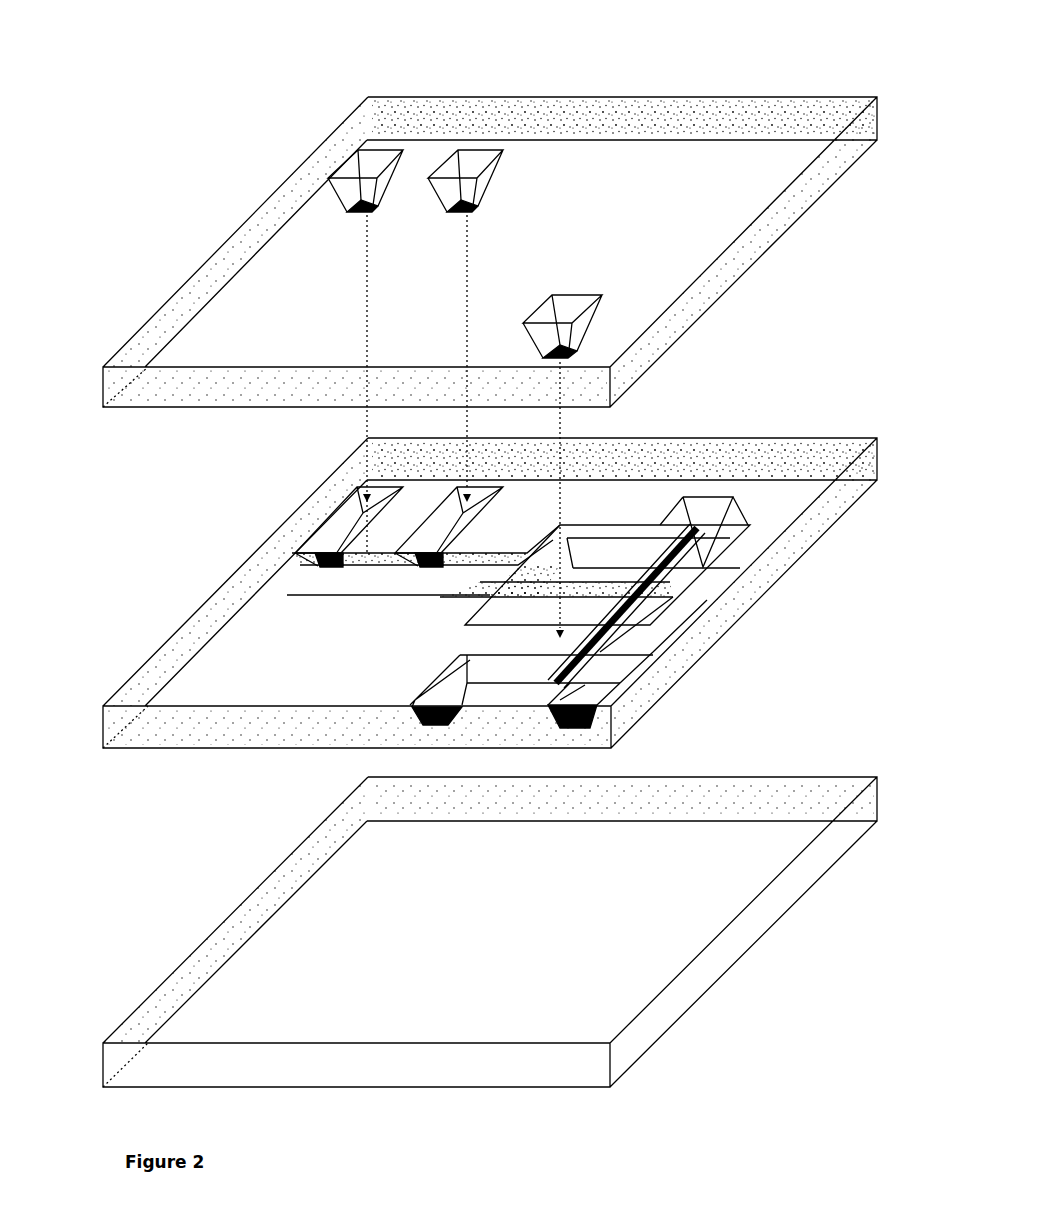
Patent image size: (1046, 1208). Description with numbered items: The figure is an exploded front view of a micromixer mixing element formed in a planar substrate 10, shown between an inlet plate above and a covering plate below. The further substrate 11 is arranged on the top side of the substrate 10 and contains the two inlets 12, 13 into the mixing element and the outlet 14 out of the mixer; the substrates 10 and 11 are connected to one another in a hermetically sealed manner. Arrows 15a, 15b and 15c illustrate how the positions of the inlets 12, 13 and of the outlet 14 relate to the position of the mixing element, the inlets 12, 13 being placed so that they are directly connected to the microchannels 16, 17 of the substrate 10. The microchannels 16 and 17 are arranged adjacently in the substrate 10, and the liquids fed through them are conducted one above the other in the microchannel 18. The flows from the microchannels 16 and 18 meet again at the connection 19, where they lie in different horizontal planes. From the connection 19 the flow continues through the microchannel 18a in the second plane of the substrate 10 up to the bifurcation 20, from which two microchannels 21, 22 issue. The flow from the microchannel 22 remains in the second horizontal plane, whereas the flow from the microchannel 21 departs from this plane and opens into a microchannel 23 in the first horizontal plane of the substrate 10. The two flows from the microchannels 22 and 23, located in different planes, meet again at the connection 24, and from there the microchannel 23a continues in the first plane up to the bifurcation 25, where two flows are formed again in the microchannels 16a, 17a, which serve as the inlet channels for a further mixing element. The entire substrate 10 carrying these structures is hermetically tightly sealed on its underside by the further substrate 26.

The planar substrate 10 is at (844, 500).
The further substrate 11 is at (745, 268).
The inlet 12 is at (350, 142).
The inlet 13 is at (467, 160).
The outlet 14 is at (572, 310).
The arrow 15a is at (367, 293).
The arrow 15b is at (468, 267).
The arrow 15c is at (557, 417).
The microchannel 16 is at (443, 518).
The microchannel 16a is at (630, 692).
The microchannel 17 is at (343, 522).
The microchannel 17a is at (440, 700).
The microchannel 18 is at (330, 577).
The microchannel 18a is at (410, 595).
The connection 19 is at (450, 580).
The bifurcation 20 is at (567, 538).
The microchannel 21 is at (718, 545).
The microchannel 22 is at (660, 603).
The microchannel 23 is at (680, 568).
The microchannel 23a is at (625, 655).
The connection 24 is at (655, 598).
The bifurcation 25 is at (612, 705).
The further substrate 26 is at (705, 985).